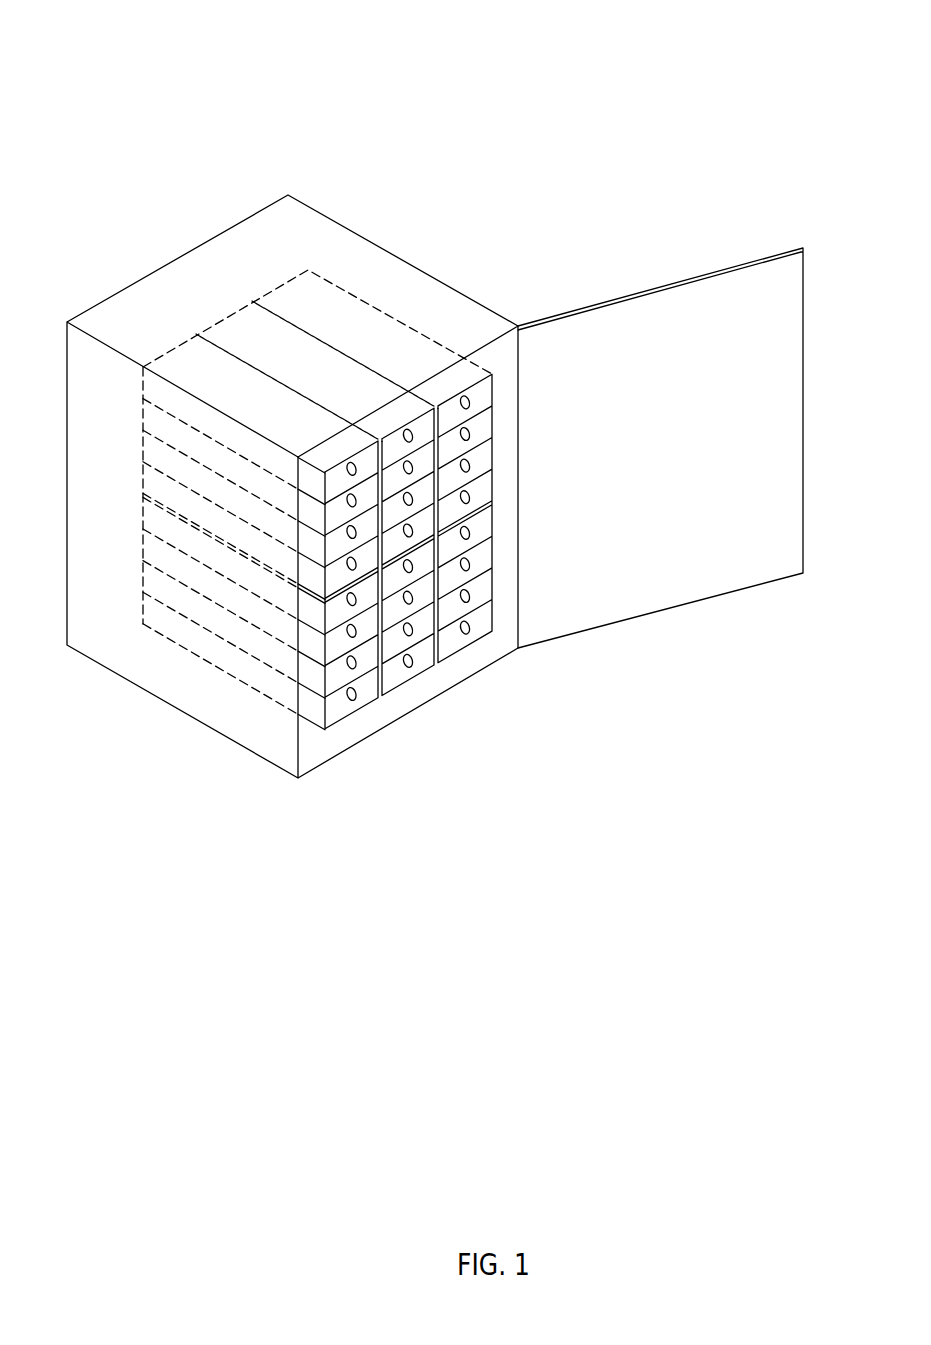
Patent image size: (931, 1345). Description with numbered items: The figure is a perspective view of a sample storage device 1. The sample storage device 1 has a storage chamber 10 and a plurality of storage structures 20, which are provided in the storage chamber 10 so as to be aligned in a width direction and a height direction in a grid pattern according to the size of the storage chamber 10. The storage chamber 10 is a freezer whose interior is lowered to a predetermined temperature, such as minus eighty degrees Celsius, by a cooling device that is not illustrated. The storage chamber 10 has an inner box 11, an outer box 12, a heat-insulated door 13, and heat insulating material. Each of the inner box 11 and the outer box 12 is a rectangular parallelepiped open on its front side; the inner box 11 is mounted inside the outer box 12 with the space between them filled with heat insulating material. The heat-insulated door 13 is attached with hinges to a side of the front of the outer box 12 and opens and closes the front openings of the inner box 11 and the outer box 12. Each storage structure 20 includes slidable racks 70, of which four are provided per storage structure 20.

The sample storage device 1 is at (637, 95).
The storage chamber 10 is at (608, 203).
The inner box 11 is at (385, 313).
The outer box 12 is at (454, 284).
The heat-insulated door 13 is at (588, 303).
The storage structure 20 is at (472, 651).
The rack 70 is at (363, 600).